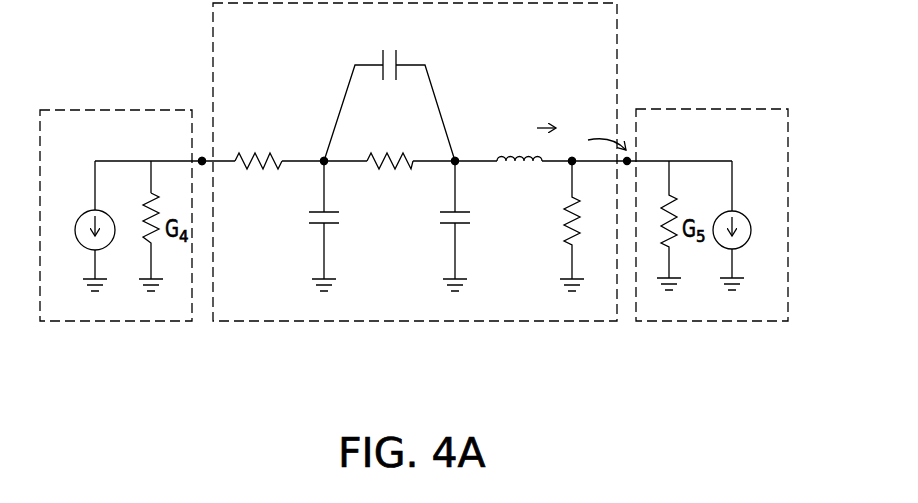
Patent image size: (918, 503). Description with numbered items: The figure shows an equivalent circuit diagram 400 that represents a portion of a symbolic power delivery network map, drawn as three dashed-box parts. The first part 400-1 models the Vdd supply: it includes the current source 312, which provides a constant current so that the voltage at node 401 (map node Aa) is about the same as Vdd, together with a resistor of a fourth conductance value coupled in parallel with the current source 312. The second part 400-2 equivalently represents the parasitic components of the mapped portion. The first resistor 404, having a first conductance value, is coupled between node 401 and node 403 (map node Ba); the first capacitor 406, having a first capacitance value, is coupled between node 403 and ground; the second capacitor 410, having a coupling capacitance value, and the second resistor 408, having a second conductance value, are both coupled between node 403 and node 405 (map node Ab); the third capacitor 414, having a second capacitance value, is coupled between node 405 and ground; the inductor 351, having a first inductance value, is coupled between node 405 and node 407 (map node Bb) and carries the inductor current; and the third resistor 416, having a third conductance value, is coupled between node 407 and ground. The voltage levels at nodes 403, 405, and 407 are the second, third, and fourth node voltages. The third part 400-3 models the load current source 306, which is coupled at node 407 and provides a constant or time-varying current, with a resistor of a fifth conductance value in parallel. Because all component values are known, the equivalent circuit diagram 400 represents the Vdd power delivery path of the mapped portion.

The equivalent circuit diagram 400 is at (691, 68).
The part 400-1 is at (132, 322).
The part 400-2 is at (405, 322).
The part 400-3 is at (728, 322).
The node 401 is at (202, 149).
The node 403 is at (319, 150).
The first resistor 404 is at (258, 161).
The node 405 is at (462, 172).
The first capacitor 406 is at (327, 226).
The node 407 is at (566, 172).
The second resistor 408 is at (390, 163).
The second capacitor 410 is at (389, 86).
The third capacitor 414 is at (456, 226).
The third resistor 416 is at (586, 226).
The inductor 351 is at (504, 152).
The current source 312 is at (92, 226).
The current source 306 is at (745, 225).